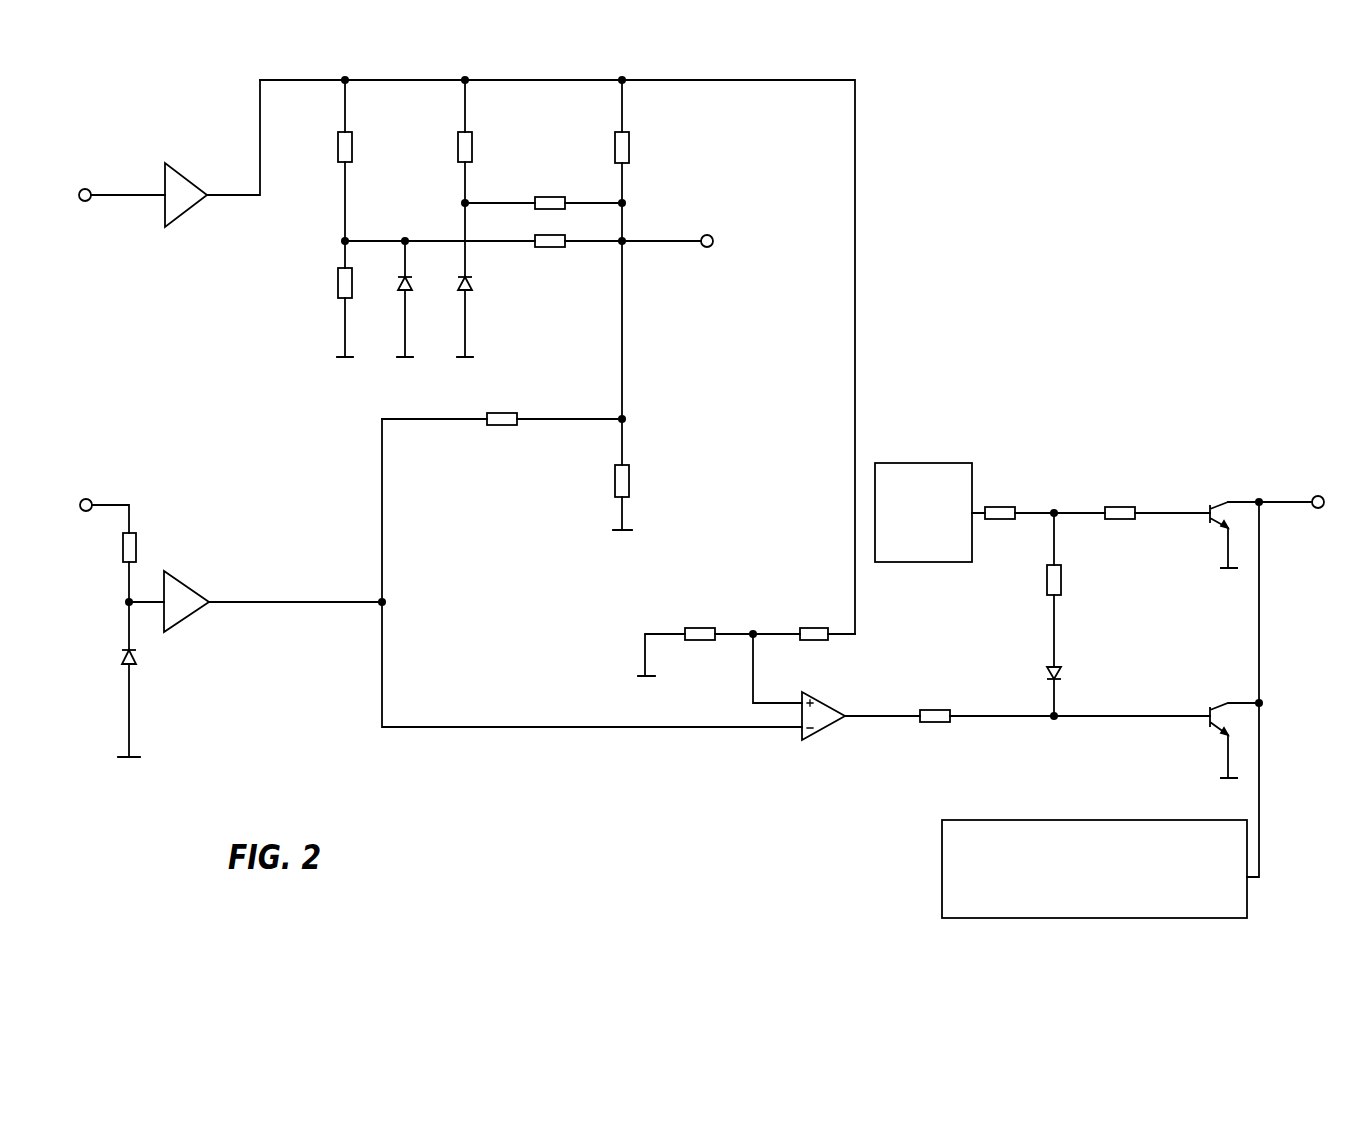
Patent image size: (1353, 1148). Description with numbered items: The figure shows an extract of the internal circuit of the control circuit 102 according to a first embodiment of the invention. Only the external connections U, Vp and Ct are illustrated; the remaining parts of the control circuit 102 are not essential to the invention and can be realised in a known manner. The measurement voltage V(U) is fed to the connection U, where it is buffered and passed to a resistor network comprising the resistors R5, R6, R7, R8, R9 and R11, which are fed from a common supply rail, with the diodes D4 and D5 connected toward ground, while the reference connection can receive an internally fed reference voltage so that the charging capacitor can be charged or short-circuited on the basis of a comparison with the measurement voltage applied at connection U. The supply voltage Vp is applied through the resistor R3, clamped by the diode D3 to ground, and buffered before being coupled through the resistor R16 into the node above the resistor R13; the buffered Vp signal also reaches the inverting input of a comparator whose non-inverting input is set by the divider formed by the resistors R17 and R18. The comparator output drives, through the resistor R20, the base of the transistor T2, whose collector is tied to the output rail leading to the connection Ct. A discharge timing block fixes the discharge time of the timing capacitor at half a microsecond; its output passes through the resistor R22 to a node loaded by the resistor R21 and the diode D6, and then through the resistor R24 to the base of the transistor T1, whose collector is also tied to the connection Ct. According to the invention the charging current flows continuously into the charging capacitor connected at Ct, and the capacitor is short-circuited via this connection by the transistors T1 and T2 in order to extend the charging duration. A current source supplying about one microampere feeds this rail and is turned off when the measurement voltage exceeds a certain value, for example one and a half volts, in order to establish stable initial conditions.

The control circuit 102 is at (709, 497).
The resistor R3 is at (120, 547).
The resistor R5 is at (336, 146).
The resistor R6 is at (336, 283).
The resistor R7 is at (456, 146).
The resistor R8 is at (550, 192).
The resistor R9 is at (550, 231).
The resistor R11 is at (613, 144).
The resistor R13 is at (613, 480).
The resistor R16 is at (501, 408).
The resistor R17 is at (699, 624).
The resistor R18 is at (813, 624).
The resistor R20 is at (934, 705).
The resistor R21 is at (1045, 579).
The resistor R22 is at (999, 503).
The resistor R24 is at (1119, 502).
The diode D3 is at (118, 656).
The diode D4 is at (394, 280).
The diode D5 is at (454, 280).
The diode D6 is at (1044, 669).
The transistor T1 is at (1221, 522).
The transistor T2 is at (1231, 729).